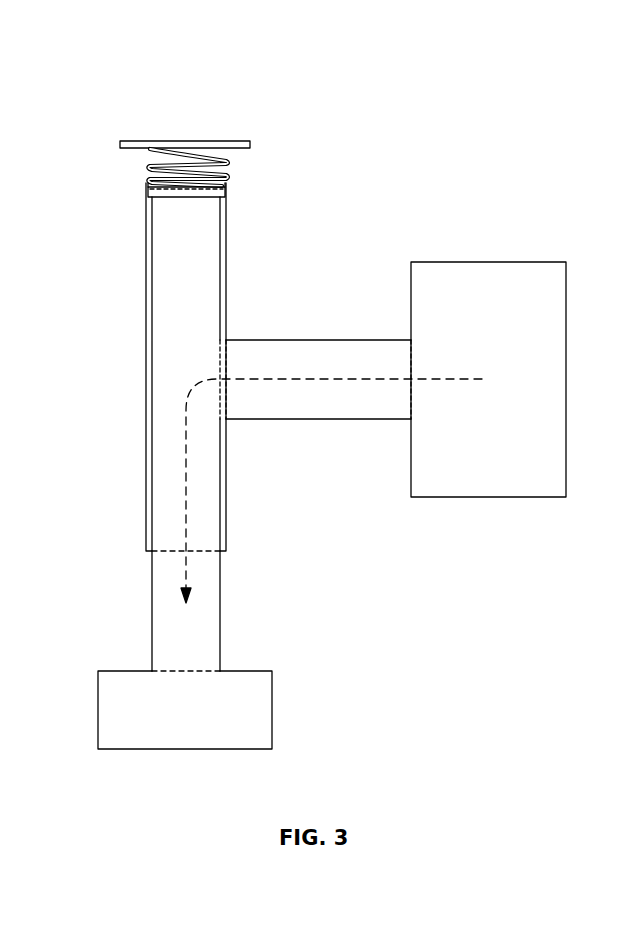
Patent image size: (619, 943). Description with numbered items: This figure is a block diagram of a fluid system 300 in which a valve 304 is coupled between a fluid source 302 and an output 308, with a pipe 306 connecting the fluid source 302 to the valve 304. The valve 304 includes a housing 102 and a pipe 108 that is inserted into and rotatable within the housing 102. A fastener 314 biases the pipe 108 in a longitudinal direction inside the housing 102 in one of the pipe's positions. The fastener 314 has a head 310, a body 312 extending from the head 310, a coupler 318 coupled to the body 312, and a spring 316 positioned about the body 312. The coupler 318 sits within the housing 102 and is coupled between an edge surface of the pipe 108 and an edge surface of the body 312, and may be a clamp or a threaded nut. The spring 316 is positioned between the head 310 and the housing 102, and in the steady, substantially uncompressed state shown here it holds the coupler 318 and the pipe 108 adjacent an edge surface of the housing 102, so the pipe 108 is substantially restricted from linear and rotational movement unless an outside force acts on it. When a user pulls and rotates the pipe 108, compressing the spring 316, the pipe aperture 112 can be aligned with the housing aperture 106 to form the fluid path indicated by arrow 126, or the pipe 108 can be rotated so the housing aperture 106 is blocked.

The fluid system 300 is at (152, 79).
The valve 304 is at (327, 188).
The fastener 314 is at (203, 121).
The head 310 is at (238, 141).
The spring 316 is at (226, 160).
The body 312 is at (150, 167).
The coupler 318 is at (183, 193).
The housing 102 is at (228, 272).
The pipe 108 is at (222, 610).
The housing aperture 106 is at (227, 352).
The pipe 306 is at (330, 421).
The arrow 126 is at (318, 379).
The pipe aperture 112 is at (217, 363).
The fluid source 302 is at (488, 262).
The output 308 is at (272, 712).